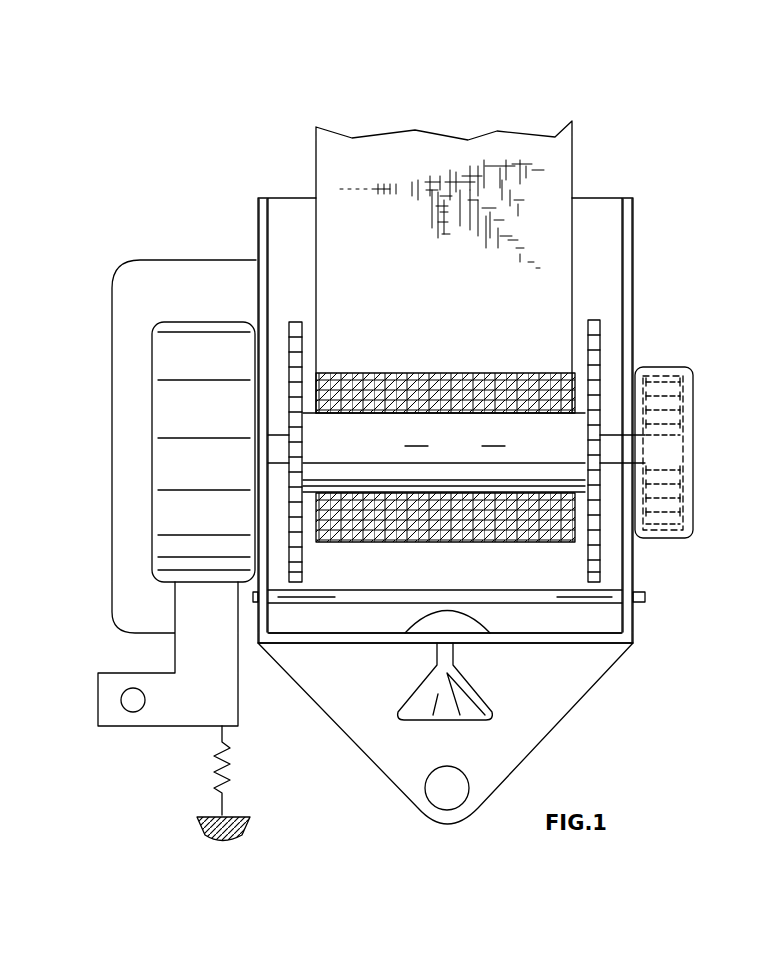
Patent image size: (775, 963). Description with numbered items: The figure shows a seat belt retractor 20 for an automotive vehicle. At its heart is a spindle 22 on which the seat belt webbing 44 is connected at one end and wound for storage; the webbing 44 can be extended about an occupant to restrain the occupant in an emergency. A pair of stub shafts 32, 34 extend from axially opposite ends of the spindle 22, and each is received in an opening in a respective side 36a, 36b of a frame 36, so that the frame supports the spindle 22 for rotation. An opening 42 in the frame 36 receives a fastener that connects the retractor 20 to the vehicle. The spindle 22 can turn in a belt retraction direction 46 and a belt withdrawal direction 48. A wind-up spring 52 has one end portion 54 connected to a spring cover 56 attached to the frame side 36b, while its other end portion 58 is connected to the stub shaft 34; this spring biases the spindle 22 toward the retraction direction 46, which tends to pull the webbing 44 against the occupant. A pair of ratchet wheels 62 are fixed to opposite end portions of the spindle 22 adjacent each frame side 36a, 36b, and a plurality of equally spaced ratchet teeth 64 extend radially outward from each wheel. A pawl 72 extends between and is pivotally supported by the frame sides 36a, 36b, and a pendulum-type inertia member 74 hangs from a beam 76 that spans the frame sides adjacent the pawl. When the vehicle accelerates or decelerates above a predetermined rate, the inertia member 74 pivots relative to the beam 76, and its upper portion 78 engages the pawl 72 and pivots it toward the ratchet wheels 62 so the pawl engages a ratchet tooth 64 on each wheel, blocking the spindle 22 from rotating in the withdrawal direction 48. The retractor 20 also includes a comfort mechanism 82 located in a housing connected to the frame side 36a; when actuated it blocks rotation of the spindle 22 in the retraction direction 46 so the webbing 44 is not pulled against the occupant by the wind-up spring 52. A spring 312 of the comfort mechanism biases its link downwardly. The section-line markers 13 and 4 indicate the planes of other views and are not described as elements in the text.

The seat belt retractor 20 is at (676, 179).
The frame 36 is at (637, 654).
The frame side 36a is at (262, 247).
The frame side 36b is at (628, 265).
The opening 42 is at (447, 784).
The pendulum-type inertia member 74 is at (485, 689).
The upper portion of the inertia member 78 is at (458, 620).
The beam 76 is at (305, 640).
The pawl 72 is at (483, 595).
The seat belt webbing 44 is at (440, 150).
The belt withdrawal direction 48 is at (437, 386).
The belt retraction direction 46 is at (485, 522).
The spindle 22 is at (470, 459).
The stub shaft 32 is at (278, 448).
The stub shaft 34 is at (600, 452).
The ratchet wheel 62 is at (310, 330).
The ratchet teeth 64 is at (297, 368).
The spring cover 56 is at (693, 510).
The wind-up spring 52 is at (680, 402).
The end portion of the wind-up spring 54 is at (665, 378).
The end portion of the wind-up spring 58 is at (688, 452).
The section line / bracket arm 13 is at (200, 222).
The comfort mechanism 82 is at (146, 358).
The spring 312 is at (230, 770).
The section line 4- 4 is at (253, 170).